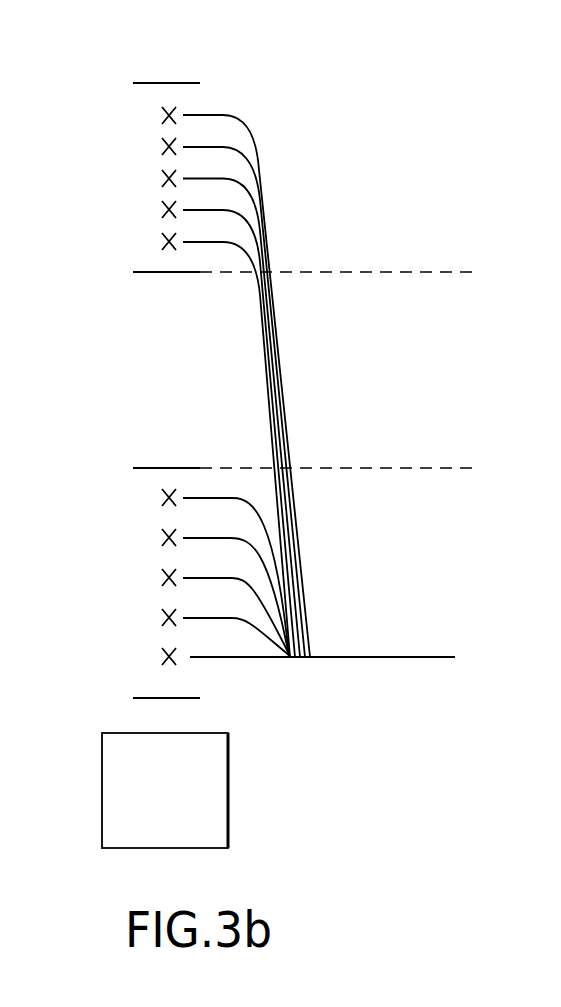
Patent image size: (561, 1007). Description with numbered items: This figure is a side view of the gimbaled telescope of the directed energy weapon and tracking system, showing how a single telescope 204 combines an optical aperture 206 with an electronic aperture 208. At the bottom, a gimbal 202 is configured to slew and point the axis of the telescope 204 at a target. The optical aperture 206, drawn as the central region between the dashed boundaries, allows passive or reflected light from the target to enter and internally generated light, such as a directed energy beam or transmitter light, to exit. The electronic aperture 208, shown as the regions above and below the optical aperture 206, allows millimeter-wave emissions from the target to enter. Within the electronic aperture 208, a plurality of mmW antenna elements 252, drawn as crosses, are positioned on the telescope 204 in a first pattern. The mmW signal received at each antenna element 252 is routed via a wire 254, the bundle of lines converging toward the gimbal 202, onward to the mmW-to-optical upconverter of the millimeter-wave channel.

The gimbal 202 is at (229, 822).
The telescope 204 is at (153, 83).
The optical aperture 206 is at (183, 391).
The electronic aperture 208 is at (57, 162).
The mmW antenna elements 252 is at (162, 157).
The wire 254 is at (265, 227).